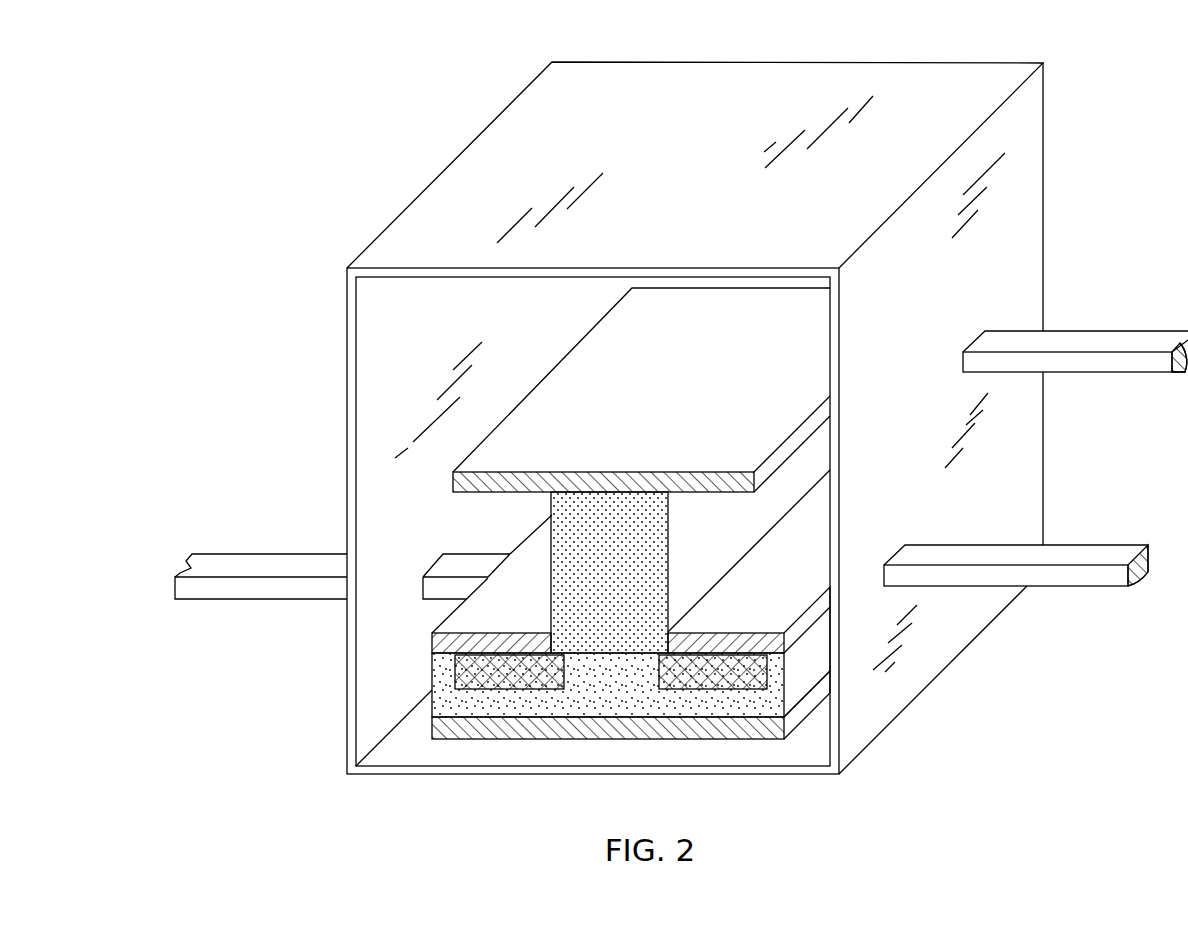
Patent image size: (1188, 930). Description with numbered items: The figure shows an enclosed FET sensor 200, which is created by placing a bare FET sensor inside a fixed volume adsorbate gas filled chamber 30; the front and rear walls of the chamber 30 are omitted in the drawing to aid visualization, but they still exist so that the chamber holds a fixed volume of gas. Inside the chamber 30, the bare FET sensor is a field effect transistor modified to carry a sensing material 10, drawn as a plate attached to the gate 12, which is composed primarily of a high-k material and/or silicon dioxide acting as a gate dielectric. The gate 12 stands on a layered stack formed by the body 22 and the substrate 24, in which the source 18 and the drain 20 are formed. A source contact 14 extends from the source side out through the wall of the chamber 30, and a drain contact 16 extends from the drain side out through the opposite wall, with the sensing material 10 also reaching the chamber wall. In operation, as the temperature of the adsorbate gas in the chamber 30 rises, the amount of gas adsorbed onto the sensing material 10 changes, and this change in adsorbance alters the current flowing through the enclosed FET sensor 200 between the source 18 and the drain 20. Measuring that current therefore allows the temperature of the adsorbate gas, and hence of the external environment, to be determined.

The enclosed FET sensor 200 is at (681, 423).
The fixed volume adsorbate gas filled chamber 30 is at (938, 83).
The sensing material 10 is at (810, 336).
The gate 12 is at (572, 540).
The source contact 14 is at (473, 618).
The drain contact 16 is at (970, 550).
The source 18 is at (437, 670).
The drain 20 is at (752, 670).
The body 22 is at (607, 693).
The substrate 24 is at (700, 730).